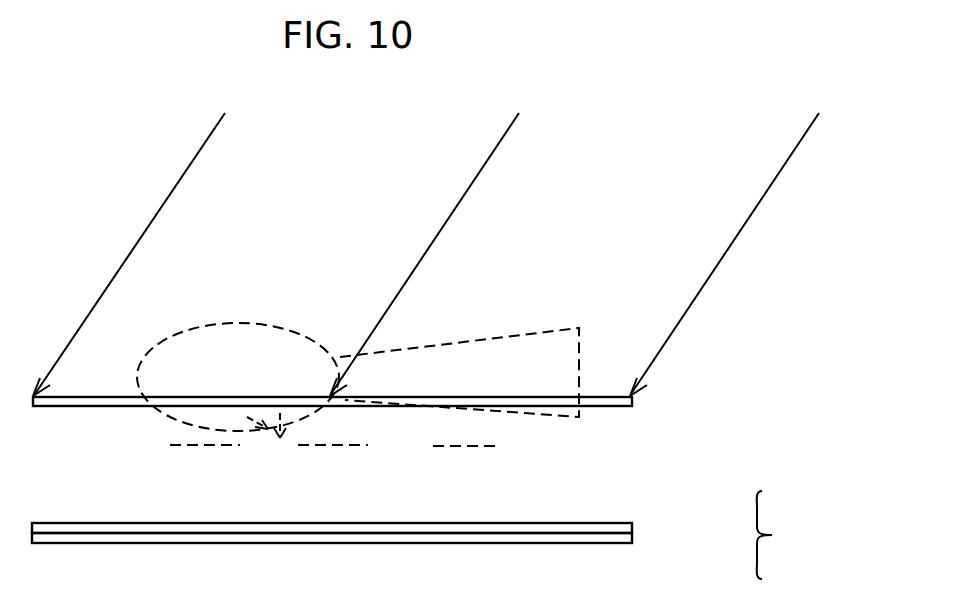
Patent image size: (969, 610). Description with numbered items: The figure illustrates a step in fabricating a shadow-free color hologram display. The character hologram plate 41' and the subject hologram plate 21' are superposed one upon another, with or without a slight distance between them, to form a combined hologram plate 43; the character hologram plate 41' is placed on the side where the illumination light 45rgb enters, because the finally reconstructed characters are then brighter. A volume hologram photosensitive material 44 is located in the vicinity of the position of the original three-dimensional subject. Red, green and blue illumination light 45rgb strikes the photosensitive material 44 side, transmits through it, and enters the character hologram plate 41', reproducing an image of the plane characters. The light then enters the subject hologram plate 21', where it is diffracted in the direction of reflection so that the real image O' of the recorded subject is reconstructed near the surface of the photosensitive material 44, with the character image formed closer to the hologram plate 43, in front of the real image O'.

The illumination light 45rgb is at (707, 283).
The volume hologram photosensitive material 44 is at (632, 399).
The real image of the three-dimensional subject O' is at (233, 351).
The character hologram plate 41' is at (393, 512).
The subject hologram plate 21' is at (393, 554).
The hologram plate 43 is at (788, 535).